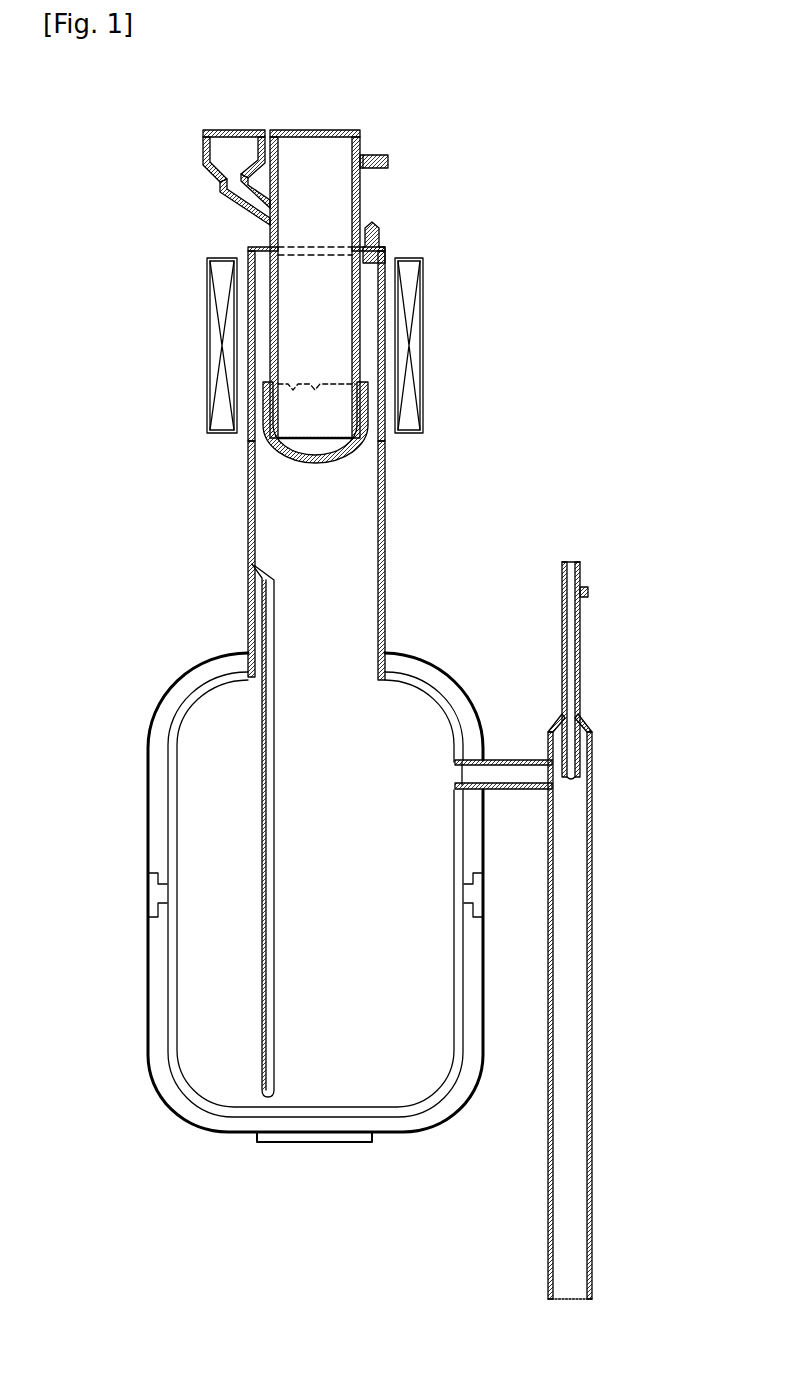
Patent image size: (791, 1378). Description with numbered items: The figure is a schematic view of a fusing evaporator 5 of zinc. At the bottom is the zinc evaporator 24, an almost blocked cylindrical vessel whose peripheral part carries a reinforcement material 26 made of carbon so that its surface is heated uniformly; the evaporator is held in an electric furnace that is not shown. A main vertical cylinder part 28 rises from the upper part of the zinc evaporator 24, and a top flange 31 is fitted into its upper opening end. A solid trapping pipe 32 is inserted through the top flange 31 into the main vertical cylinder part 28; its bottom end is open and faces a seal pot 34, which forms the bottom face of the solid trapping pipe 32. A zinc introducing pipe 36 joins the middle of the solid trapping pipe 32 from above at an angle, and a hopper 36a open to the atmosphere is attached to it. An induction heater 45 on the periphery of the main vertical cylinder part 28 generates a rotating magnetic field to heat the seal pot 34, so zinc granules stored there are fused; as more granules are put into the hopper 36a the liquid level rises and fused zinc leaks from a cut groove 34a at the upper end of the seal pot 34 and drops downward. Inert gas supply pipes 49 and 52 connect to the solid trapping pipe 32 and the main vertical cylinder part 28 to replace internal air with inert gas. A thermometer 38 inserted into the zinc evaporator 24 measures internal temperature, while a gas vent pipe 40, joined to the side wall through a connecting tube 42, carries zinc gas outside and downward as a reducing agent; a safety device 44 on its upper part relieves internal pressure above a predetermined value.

The fusing evaporator of zinc 5 is at (478, 497).
The zinc evaporator 24 is at (170, 942).
The reinforcement material 26 is at (158, 838).
The main vertical cylinder part 28 is at (388, 568).
The top flange 31 is at (322, 245).
The solid trapping pipe 32 is at (365, 292).
The seal pot 34 is at (262, 432).
The cut groove 34a is at (290, 384).
The zinc introducing pipe 36 is at (222, 190).
The hopper 36a is at (245, 150).
The thermometer 38 is at (264, 758).
The gas vent pipe 40 is at (572, 860).
The connecting tube 42 is at (505, 755).
The safety device 44 is at (582, 738).
The induction heater 45 is at (420, 345).
The inert gas supply pipe 49 is at (372, 158).
The inert gas supply pipe 52 is at (378, 236).